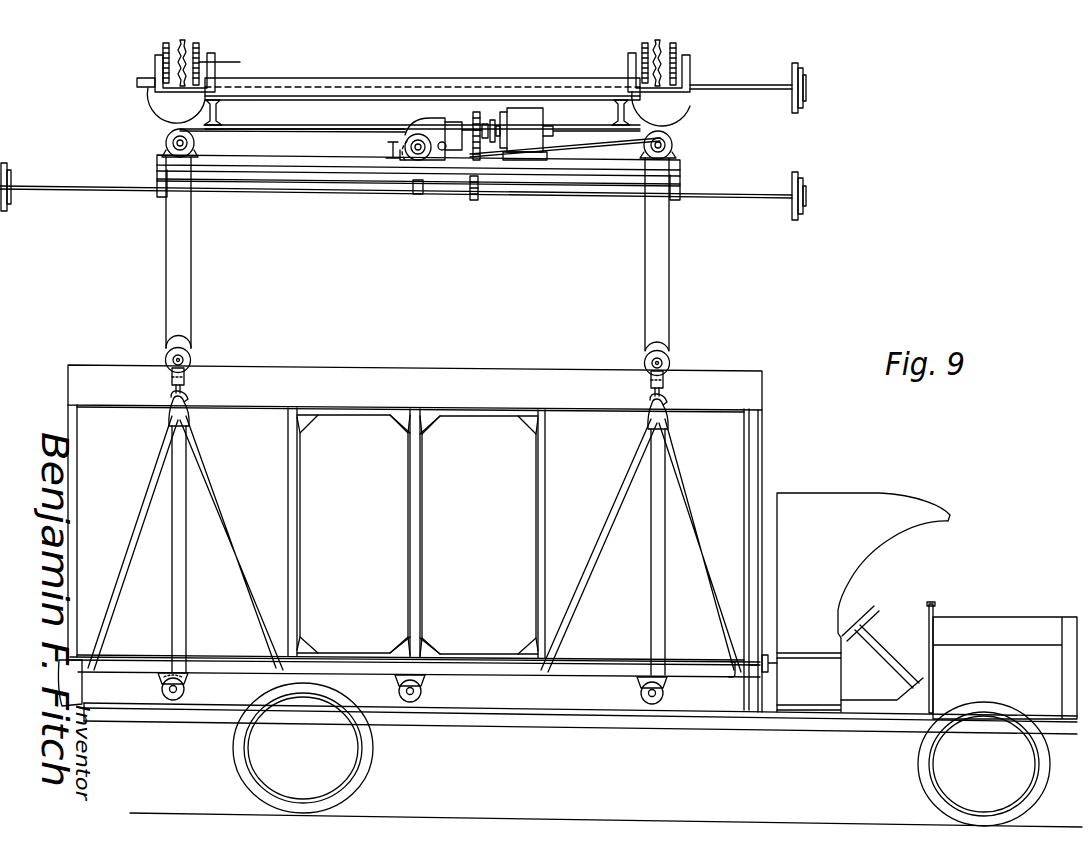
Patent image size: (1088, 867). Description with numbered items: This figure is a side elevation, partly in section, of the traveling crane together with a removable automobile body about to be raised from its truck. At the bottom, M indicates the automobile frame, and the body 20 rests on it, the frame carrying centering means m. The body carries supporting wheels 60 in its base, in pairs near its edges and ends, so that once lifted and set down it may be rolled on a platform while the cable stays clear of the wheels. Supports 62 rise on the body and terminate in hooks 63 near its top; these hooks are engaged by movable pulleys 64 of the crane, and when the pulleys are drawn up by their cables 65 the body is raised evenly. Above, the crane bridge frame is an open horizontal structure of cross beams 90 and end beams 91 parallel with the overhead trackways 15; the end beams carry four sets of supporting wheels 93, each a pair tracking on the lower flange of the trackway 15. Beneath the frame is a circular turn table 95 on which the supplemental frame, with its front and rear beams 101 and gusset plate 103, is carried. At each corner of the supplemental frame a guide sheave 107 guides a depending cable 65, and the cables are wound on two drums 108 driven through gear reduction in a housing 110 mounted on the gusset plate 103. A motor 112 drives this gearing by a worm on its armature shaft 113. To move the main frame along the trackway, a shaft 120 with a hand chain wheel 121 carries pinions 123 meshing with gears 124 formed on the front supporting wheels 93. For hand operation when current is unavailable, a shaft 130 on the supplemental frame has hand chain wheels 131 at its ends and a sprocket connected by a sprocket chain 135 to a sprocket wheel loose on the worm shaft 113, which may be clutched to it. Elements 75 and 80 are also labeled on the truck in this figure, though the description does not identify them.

The trackway 15 is at (194, 50).
The body 20 is at (415, 538).
The supporting wheels 60 is at (185, 690).
The supports 62 is at (186, 548).
The hooks 63 is at (188, 396).
The movable pulleys 64 is at (191, 360).
The cables 65 is at (683, 277).
The stop 75 is at (727, 675).
The hook fastener 80 is at (770, 655).
The cross beams 90 is at (422, 81).
The end beams 91 is at (203, 52).
The supporting wheels 93 is at (160, 50).
The turn table 95 is at (422, 114).
The front and rear beams 101 is at (300, 163).
The gusset plate 103 is at (380, 158).
The guide sheave 107 is at (166, 136).
The drums 108 is at (408, 124).
The housing 110 is at (430, 118).
The motor 112 is at (551, 134).
The armature shaft 113 is at (466, 112).
The shaft 120 is at (772, 93).
The hand chain wheel 121 is at (791, 72).
The pinions 123 is at (682, 108).
The gears 124 is at (650, 44).
The shaft 130 is at (396, 201).
The hand chain wheels 131 is at (12, 176).
The sprocket chain 135 is at (474, 200).
The automobile frame M is at (82, 685).
The centering means m is at (746, 700).